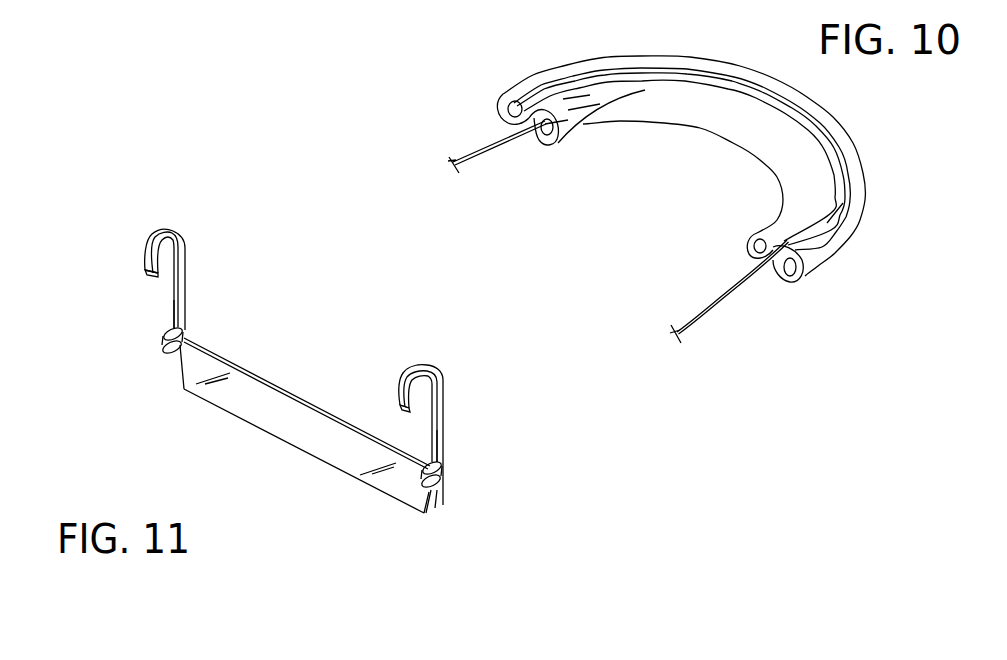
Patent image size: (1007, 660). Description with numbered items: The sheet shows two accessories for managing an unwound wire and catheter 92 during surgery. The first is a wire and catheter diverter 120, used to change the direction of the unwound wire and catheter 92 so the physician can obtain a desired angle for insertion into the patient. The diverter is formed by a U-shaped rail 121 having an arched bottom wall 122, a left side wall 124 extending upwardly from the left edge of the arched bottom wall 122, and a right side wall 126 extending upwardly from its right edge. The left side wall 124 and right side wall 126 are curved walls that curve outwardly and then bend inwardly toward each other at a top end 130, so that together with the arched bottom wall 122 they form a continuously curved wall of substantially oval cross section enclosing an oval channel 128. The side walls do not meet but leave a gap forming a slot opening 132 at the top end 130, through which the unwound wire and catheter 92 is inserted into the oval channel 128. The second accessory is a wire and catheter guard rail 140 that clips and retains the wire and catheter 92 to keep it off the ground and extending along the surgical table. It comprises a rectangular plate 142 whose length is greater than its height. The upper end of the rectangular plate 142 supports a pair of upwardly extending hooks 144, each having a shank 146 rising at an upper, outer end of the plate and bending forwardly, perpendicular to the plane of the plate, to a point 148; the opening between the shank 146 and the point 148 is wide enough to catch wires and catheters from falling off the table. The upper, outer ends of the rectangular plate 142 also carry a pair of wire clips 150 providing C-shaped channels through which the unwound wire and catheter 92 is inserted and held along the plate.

In FIG. 10, the unwound wire and catheter 92 is at (473, 165).
In FIG. 10, the wire and catheter diverter 120 is at (490, 92).
In FIG. 10, the U-shaped rail 121 is at (850, 124).
In FIG. 10, the arched bottom wall 122 is at (545, 143).
In FIG. 10, the left side wall 124 is at (527, 82).
In FIG. 10, the right side wall 126 is at (593, 112).
In FIG. 10, the oval channel 128 is at (787, 268).
In FIG. 10, the top end 130 is at (597, 80).
In FIG. 10, the slot opening 132 is at (668, 72).
In FIG. 11, the wire and catheter guard rail 140 is at (124, 243).
In FIG. 11, the rectangular plate 142 is at (337, 453).
In FIG. 11, the hook 144 is at (190, 278).
In FIG. 11, the shank 146 is at (187, 304).
In FIG. 11, the point 148 is at (147, 272).
In FIG. 11, the wire clip 150 is at (170, 348).